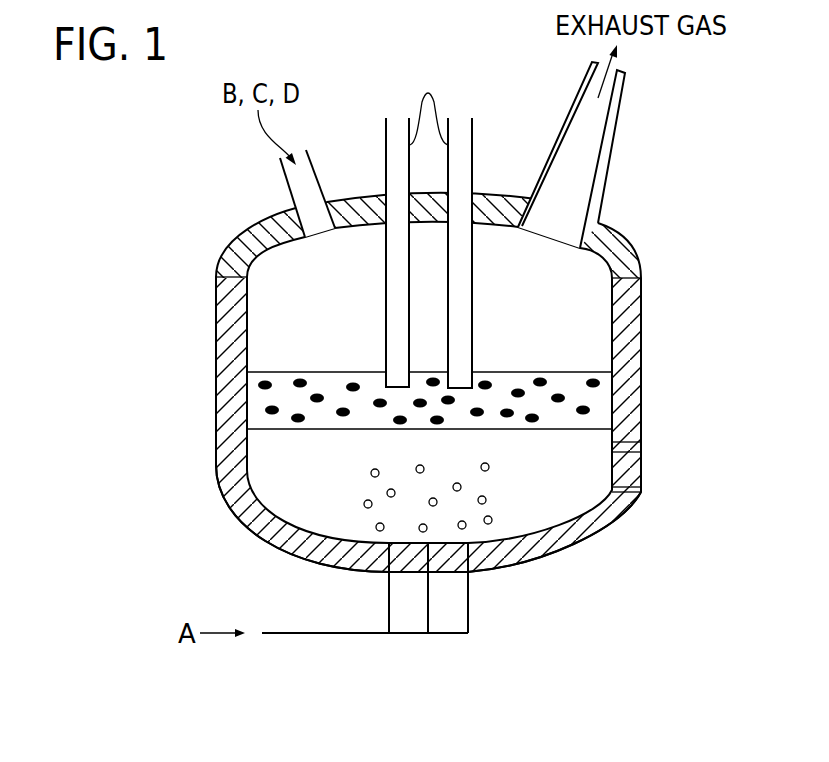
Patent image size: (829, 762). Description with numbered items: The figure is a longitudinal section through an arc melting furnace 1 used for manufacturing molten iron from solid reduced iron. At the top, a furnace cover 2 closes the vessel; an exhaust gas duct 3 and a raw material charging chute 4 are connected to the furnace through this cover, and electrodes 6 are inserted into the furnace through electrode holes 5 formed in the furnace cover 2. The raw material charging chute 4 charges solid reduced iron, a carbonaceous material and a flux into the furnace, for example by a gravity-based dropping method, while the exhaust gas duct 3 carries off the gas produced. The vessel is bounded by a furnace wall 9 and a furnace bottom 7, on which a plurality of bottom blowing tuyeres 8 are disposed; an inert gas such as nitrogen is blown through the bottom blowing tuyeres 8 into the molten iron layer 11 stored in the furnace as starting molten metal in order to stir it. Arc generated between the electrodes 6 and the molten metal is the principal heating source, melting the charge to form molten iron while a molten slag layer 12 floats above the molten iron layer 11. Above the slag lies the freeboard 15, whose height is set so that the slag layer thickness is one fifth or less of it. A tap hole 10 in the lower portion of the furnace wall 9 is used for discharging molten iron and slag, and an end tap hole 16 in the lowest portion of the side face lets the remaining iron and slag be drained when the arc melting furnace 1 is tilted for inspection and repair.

The arc melting furnace 1 is at (706, 375).
The furnace cover 2 is at (243, 240).
The exhaust gas duct 3 is at (608, 144).
The raw material charging chute 4 is at (287, 182).
The electrode holes 5 is at (410, 193).
The electrodes 6 is at (429, 103).
The furnace bottom 7 is at (528, 558).
The bottom blowing tuyeres 8 is at (430, 608).
The furnace wall 9 is at (635, 343).
The tap hole 10 is at (634, 446).
The molten iron layer 11 is at (560, 497).
The molten slag layer 12 is at (260, 405).
The freeboard 15 is at (547, 317).
The end tap hole 16 is at (634, 490).